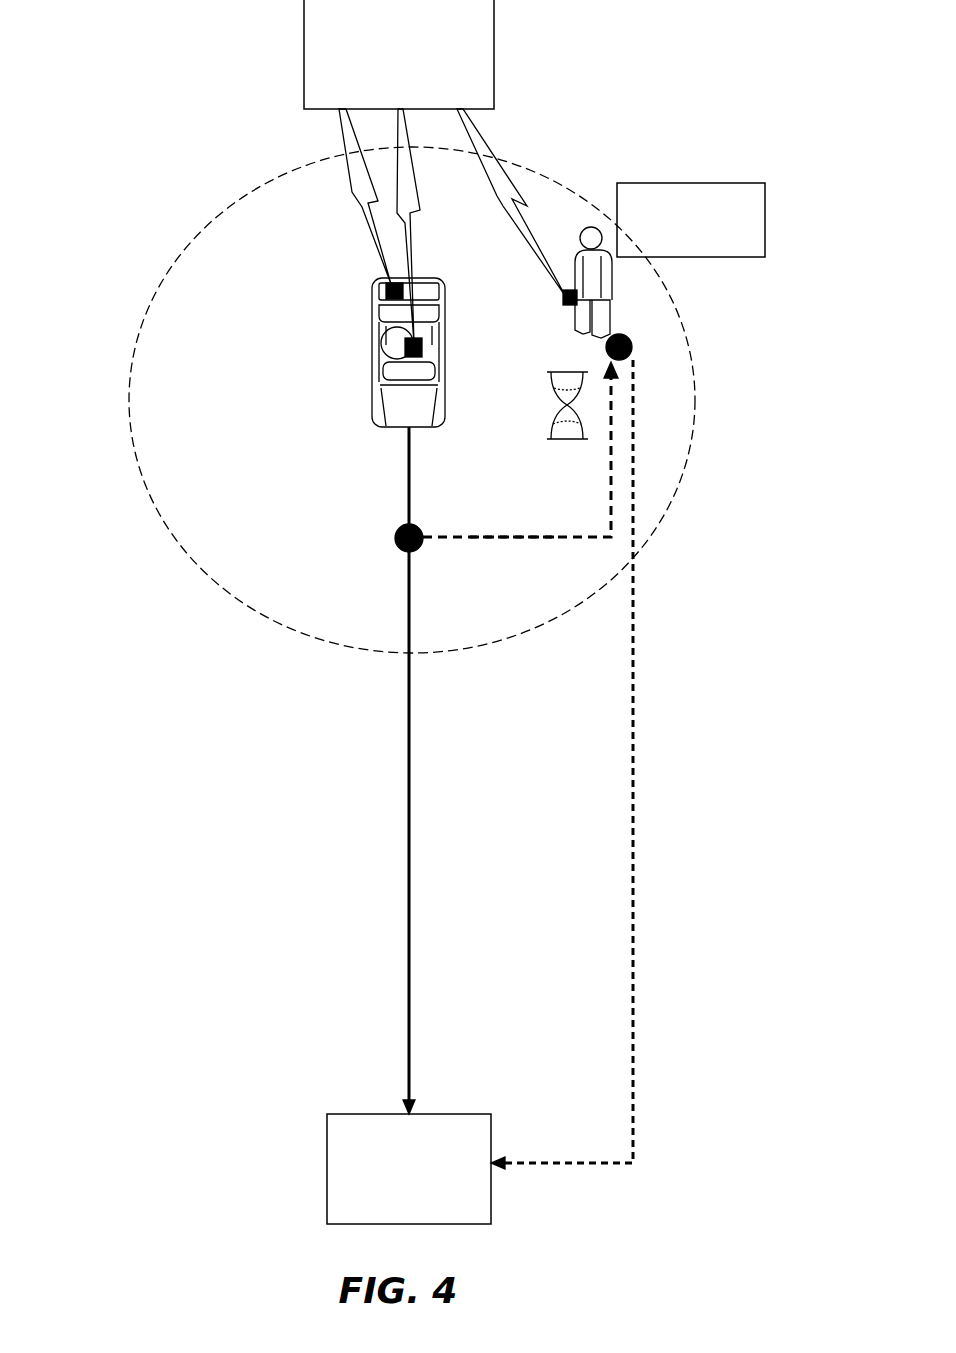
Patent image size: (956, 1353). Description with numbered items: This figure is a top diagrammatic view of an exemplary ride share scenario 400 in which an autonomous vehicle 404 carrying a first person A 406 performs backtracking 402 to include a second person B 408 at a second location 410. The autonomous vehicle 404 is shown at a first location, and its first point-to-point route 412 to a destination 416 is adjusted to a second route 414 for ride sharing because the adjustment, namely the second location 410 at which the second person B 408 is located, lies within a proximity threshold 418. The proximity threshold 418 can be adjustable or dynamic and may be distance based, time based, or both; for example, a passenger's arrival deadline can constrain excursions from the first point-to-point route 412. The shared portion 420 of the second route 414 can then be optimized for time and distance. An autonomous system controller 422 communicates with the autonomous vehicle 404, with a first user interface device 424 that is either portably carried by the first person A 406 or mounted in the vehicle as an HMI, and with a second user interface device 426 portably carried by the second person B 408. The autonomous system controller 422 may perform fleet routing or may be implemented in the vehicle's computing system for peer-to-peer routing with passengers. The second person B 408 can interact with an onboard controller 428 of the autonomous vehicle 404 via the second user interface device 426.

The ride share scenario 400 is at (172, 187).
The backtracking 402 is at (572, 537).
The autonomous vehicle 404 is at (372, 420).
The first person A 406 is at (372, 343).
The second person B 408 is at (607, 301).
The second location 410 is at (750, 246).
The first point-to-point route 412 is at (407, 480).
The second route 414 is at (505, 535).
The destination 416 is at (393, 1195).
The proximity threshold 418 is at (200, 585).
The shared portion 420 is at (633, 755).
The autonomous system controller 422 is at (383, 93).
The first user interface device 424 is at (405, 356).
The second user interface device 426 is at (563, 300).
The onboard controller 428 is at (374, 290).